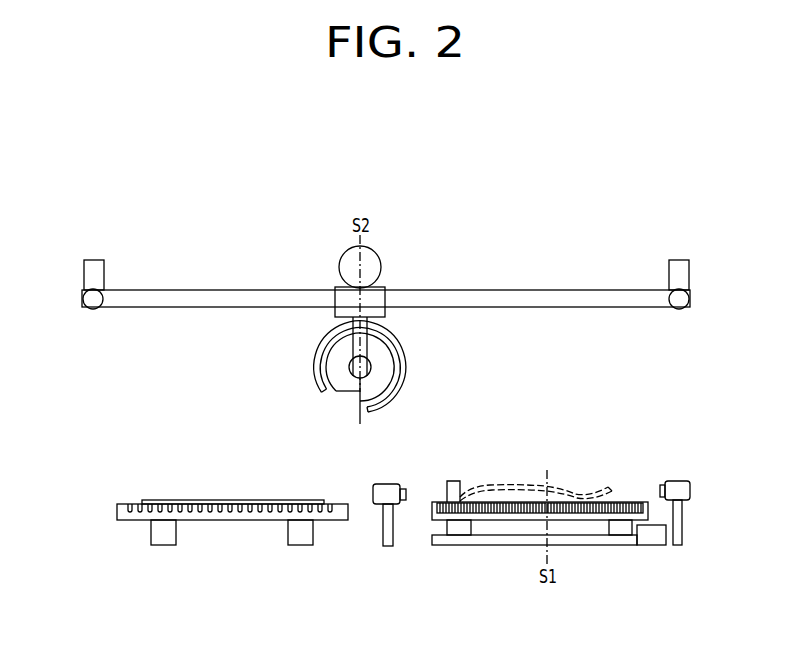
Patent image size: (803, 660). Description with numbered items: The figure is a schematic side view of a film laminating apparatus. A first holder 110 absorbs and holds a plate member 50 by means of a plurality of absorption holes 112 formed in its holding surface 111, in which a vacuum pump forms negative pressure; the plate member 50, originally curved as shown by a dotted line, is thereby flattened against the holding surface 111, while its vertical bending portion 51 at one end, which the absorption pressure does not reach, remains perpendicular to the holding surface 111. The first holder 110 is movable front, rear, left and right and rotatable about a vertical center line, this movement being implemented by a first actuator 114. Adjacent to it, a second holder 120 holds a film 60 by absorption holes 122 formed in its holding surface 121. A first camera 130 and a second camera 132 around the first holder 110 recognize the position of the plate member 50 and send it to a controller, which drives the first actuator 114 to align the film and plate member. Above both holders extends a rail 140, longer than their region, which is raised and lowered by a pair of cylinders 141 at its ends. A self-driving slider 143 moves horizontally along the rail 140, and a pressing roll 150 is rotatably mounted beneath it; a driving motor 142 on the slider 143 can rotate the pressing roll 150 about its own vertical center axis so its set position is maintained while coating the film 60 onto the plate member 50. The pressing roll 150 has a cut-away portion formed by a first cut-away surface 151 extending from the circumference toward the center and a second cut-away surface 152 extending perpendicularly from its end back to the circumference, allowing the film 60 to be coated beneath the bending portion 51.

The plate member 50 is at (590, 489).
The vertical bending portion 51 is at (453, 482).
The film 60 is at (398, 387).
The first holder 110 is at (547, 519).
The holding surface 111 is at (433, 502).
The absorption holes 112 is at (641, 502).
The first actuator 114 is at (655, 546).
The second holder 120 is at (246, 523).
The holding surface 121 is at (338, 502).
The absorption holes 122 is at (333, 502).
The first camera 130 is at (677, 484).
The second camera 132 is at (388, 486).
The rail 140 is at (528, 293).
The cylinders 141 is at (99, 268).
The driving motor 142 is at (368, 262).
The slider 143 is at (382, 300).
The pressing roll 150 is at (381, 380).
The first cut-away surface 151 is at (360, 400).
The second cut-away surface 152 is at (335, 390).